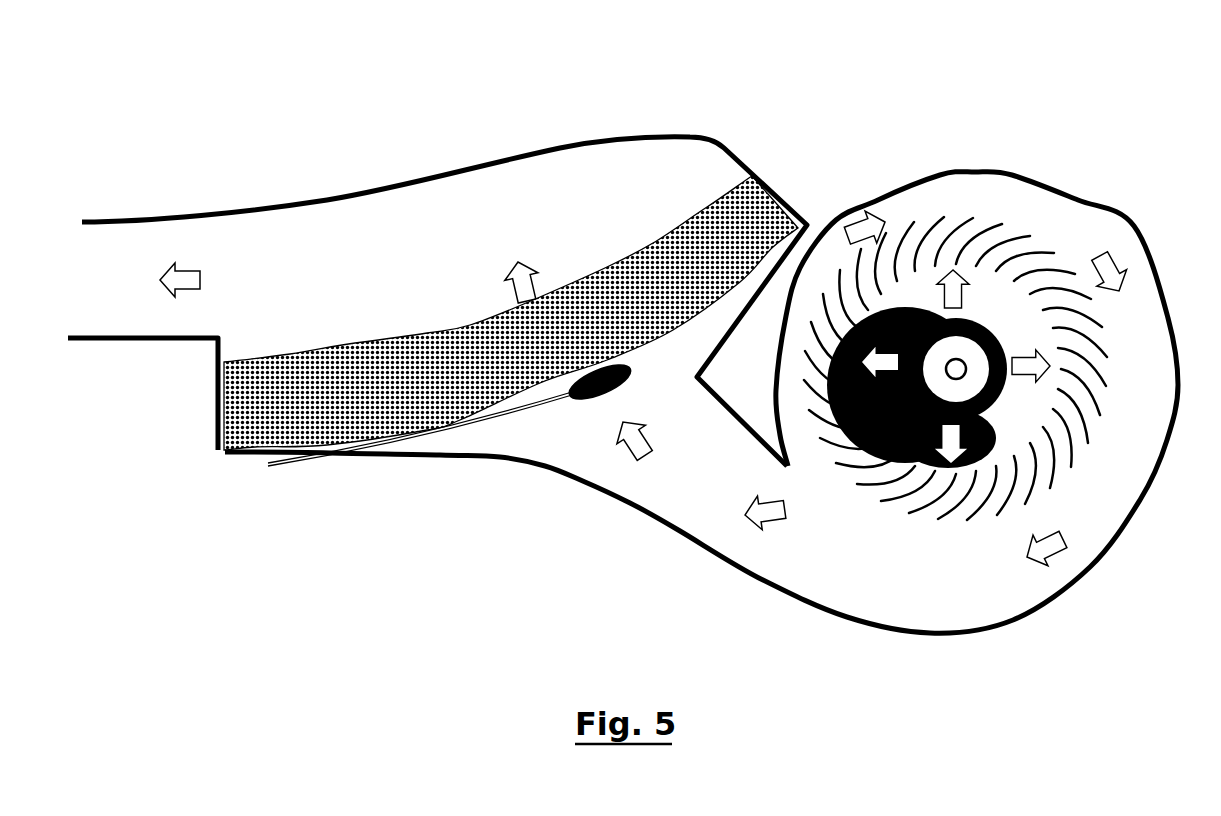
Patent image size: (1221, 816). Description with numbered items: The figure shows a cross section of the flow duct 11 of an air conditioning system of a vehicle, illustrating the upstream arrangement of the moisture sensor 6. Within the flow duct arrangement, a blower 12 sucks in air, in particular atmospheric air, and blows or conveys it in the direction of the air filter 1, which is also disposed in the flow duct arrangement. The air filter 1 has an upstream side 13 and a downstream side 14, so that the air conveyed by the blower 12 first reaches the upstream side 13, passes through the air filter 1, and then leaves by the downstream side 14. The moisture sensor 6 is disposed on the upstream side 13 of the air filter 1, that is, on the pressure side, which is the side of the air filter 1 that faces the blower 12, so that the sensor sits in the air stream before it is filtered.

The air filter 1 is at (653, 257).
The moisture sensor 6 is at (602, 393).
The flow duct 11 is at (732, 104).
The blower 12 is at (1033, 257).
The upstream side 13 is at (657, 343).
The downstream side 14 is at (335, 347).